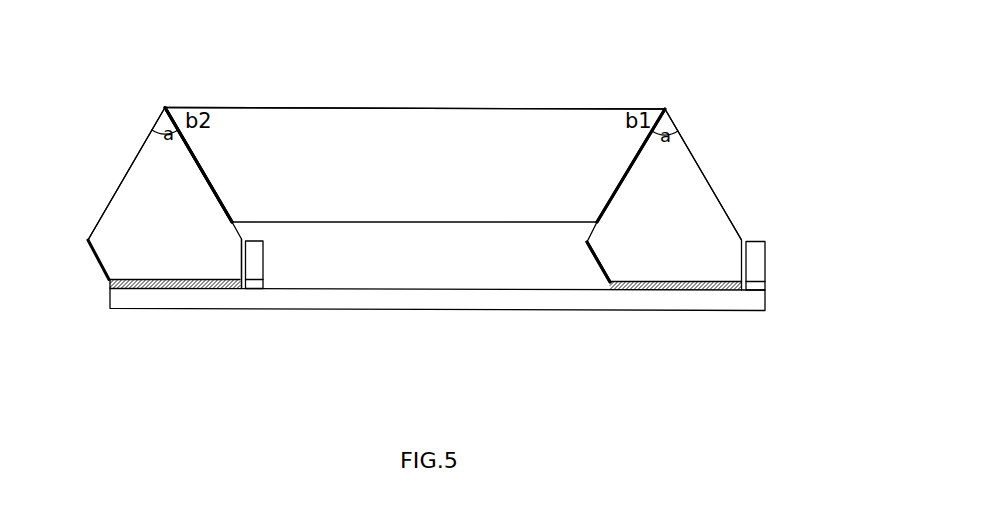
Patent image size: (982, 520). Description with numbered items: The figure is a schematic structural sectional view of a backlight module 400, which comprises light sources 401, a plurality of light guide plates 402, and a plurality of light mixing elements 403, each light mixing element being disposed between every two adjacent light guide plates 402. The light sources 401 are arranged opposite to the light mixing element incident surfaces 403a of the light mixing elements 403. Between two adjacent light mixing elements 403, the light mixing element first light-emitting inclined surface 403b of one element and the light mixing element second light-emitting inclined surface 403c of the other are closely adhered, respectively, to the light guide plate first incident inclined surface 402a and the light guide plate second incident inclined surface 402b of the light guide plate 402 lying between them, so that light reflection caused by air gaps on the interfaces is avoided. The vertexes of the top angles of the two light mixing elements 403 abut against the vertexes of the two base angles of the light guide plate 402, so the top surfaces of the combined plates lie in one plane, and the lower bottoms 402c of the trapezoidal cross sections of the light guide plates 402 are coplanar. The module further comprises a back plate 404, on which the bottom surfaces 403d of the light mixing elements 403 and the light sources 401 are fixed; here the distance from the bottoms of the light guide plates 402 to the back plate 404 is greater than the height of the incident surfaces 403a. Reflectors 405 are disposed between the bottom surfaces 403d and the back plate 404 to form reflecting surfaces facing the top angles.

The backlight module 400 is at (423, 424).
The light source 401 is at (257, 262).
The light guide plate 402 is at (388, 162).
The light guide plate first incident inclined surface 402a is at (636, 153).
The light guide plate second incident inclined surface 402b is at (191, 153).
The lower bottom of trapezoidal cross section 402c is at (491, 110).
The light mixing element 403 is at (158, 240).
The light mixing element incident surface 403a is at (242, 260).
The light mixing element first light-emitting inclined surface 403b is at (117, 190).
The light mixing element second light-emitting inclined surface 403c is at (185, 148).
The bottom surface of light mixing element 403d is at (692, 281).
The back plate 404 is at (518, 298).
The reflector 405 is at (720, 290).